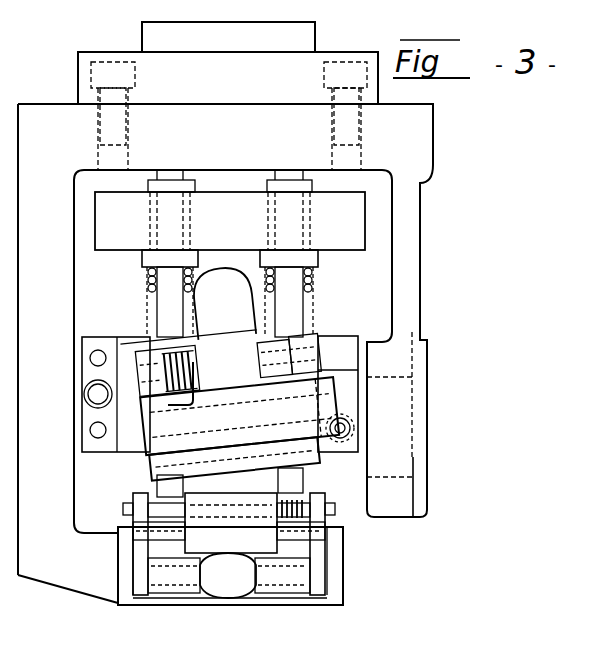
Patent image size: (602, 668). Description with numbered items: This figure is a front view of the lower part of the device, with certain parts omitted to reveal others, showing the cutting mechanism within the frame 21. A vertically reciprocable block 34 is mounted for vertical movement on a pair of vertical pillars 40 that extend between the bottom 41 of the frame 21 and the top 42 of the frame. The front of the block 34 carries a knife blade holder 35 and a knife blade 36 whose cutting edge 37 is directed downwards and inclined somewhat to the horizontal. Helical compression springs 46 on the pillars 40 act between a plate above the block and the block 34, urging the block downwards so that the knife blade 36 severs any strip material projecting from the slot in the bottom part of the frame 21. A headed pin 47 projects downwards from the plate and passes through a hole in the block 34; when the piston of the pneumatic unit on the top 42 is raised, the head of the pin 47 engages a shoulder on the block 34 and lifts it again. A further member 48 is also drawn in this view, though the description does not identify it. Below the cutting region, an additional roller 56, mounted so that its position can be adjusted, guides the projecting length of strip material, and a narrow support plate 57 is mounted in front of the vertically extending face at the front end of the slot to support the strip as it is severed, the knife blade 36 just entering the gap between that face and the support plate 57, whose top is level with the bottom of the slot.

The frame 21 is at (418, 258).
The vertically reciprocable block 34 is at (345, 352).
The knife blade holder 35 is at (239, 415).
The knife blade 36 is at (235, 465).
The cutting edge 37 is at (315, 465).
The vertical pillars 40 is at (160, 318).
The bottom of the frame 41 is at (70, 572).
The top of the frame 42 is at (228, 111).
The helical compression springs 46 is at (148, 280).
The headed pin 47 is at (246, 268).
The cross block 48 is at (230, 210).
The additional roller 56 is at (248, 585).
The support plate 57 is at (343, 568).